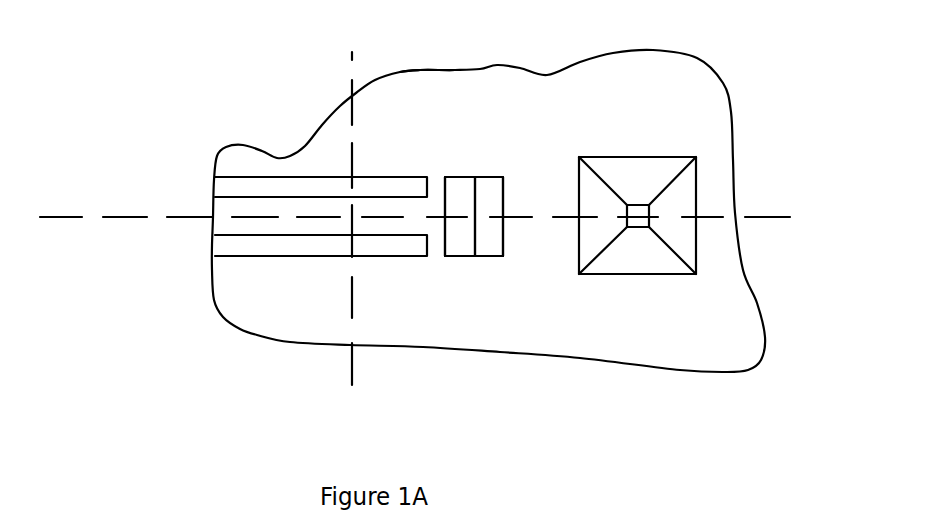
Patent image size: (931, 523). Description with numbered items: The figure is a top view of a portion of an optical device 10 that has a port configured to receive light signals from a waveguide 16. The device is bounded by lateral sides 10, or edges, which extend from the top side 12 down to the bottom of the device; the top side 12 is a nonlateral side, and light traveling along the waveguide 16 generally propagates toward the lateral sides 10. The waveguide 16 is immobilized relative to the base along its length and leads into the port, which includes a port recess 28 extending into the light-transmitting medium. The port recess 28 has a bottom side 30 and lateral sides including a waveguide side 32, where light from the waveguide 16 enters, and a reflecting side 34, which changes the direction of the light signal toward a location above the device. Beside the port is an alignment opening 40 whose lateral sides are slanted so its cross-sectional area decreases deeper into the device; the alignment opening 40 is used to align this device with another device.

The lateral sides 10 is at (552, 73).
The top side 12 is at (427, 78).
The waveguide 16 is at (203, 207).
The port recess 28 is at (473, 266).
The bottom side 30 is at (466, 186).
The waveguide side 32 is at (442, 245).
The reflecting side 34 is at (483, 186).
The alignment opening 40 is at (628, 178).